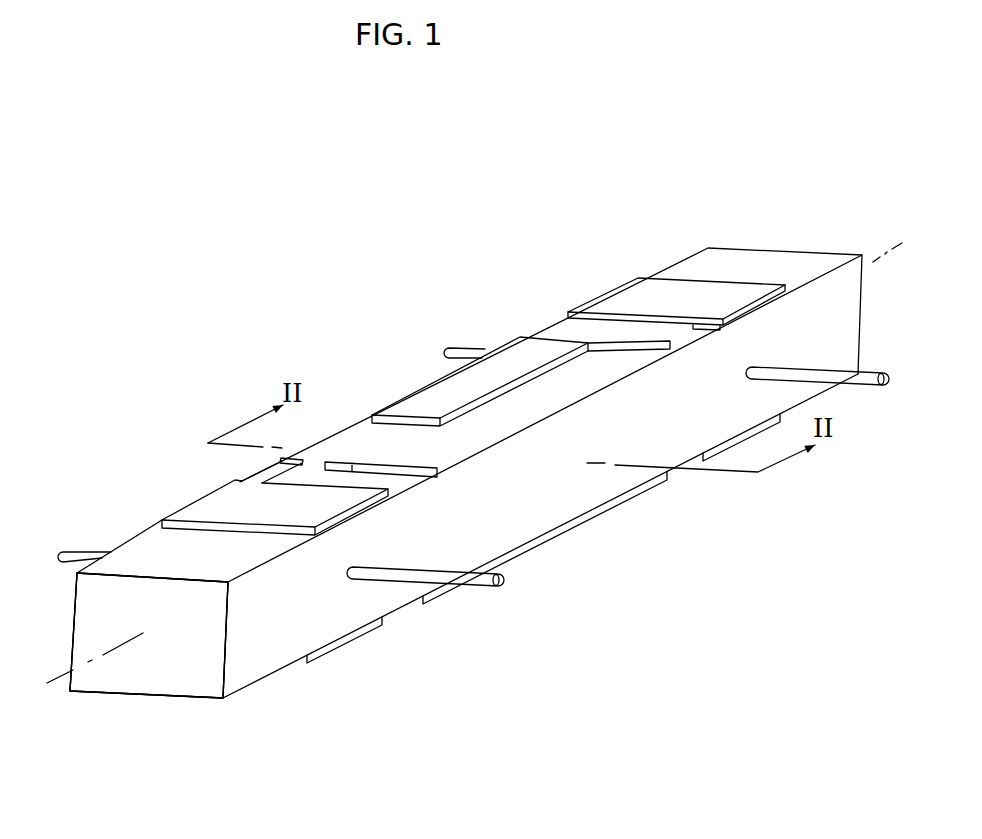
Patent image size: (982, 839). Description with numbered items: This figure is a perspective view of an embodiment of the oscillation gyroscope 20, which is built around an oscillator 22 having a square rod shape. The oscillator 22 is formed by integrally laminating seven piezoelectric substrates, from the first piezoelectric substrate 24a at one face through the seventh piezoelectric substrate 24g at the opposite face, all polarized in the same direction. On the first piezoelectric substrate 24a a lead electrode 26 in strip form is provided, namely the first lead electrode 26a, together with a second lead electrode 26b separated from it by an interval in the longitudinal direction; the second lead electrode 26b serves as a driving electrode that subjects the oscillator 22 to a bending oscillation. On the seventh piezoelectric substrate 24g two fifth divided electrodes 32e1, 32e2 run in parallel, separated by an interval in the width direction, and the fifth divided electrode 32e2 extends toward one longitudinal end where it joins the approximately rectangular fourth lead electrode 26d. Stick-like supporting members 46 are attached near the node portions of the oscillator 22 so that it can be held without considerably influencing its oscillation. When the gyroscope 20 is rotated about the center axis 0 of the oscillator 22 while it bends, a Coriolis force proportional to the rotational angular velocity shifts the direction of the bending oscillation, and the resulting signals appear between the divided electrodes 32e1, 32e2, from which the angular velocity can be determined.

The oscillation gyroscope 20 is at (708, 34).
The oscillator 22 is at (592, 283).
The first piezoelectric substrate 24a is at (195, 685).
The seventh piezoelectric substrate 24g is at (149, 635).
The lead electrode 26 is at (211, 500).
The first lead electrode 26a is at (350, 643).
The second lead electrode 26b is at (642, 492).
The fourth lead electrode 26d is at (672, 292).
The fifth divided electrode 32e1 is at (527, 347).
The fifth divided electrode 32e2 is at (432, 445).
The supporting member 46 is at (90, 552).
The center axis 0 is at (60, 680).